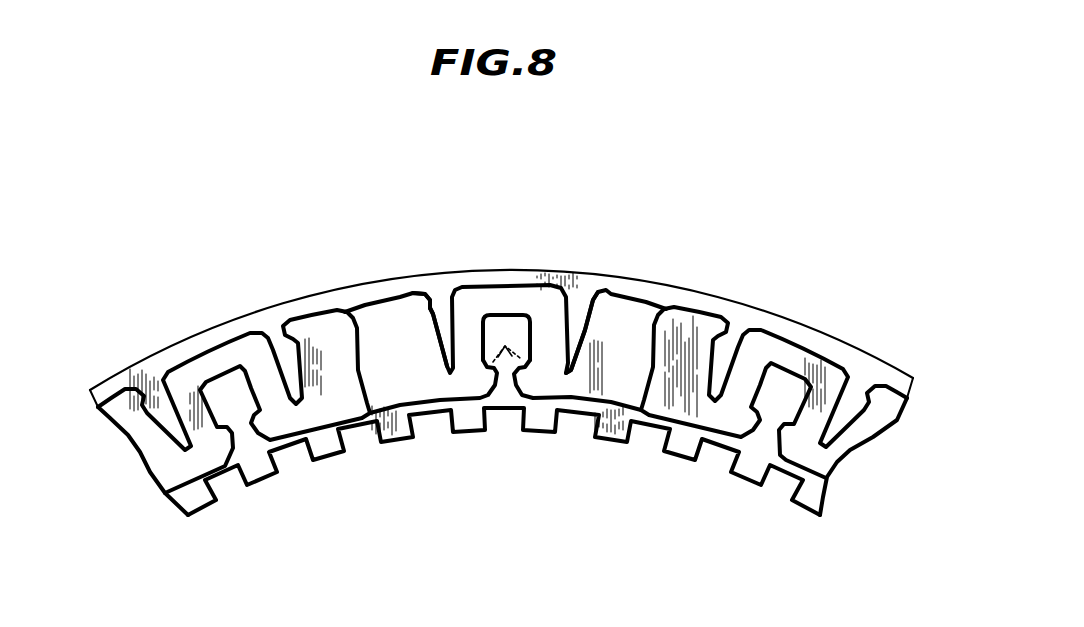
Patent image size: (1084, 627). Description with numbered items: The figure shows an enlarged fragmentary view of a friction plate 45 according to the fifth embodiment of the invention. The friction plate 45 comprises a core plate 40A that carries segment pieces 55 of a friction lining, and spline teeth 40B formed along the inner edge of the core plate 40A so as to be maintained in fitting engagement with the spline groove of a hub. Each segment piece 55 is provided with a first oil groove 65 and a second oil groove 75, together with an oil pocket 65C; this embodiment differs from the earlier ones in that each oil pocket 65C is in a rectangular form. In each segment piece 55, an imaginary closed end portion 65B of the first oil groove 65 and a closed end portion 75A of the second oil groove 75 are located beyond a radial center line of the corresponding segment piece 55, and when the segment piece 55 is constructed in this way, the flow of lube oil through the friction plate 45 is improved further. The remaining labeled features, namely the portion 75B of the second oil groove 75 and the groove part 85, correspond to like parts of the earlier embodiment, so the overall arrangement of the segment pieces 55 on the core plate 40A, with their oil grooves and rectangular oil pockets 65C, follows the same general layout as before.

The friction plate 45 is at (755, 221).
The core plate 40A is at (797, 333).
The spline teeth 40B is at (757, 470).
The segment piece 55 is at (640, 318).
The first oil groove 65 is at (505, 392).
The imaginary closed end portion 65B is at (520, 358).
The oil pocket 65C is at (508, 325).
The second oil groove 75 is at (440, 333).
The closed end portion 75A is at (424, 362).
The portion of second oil groove 75B is at (436, 355).
The groove part 85 is at (418, 300).